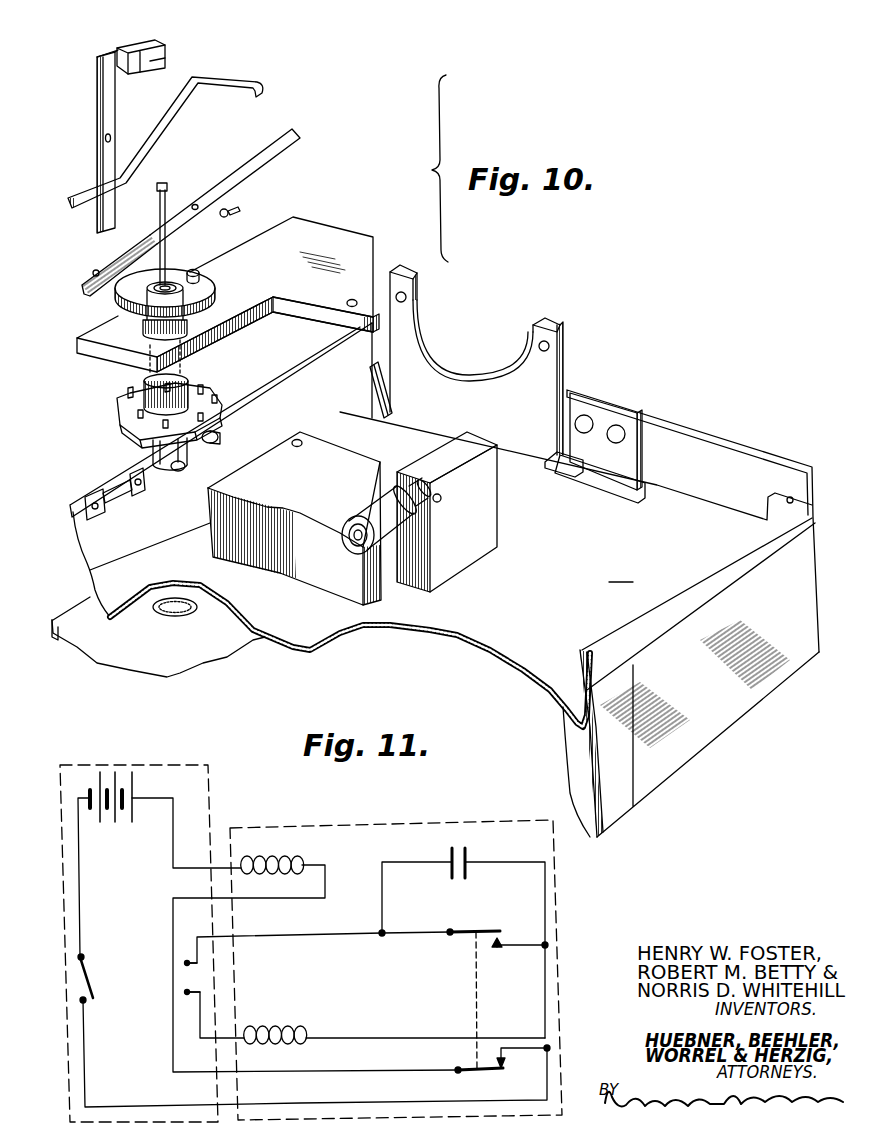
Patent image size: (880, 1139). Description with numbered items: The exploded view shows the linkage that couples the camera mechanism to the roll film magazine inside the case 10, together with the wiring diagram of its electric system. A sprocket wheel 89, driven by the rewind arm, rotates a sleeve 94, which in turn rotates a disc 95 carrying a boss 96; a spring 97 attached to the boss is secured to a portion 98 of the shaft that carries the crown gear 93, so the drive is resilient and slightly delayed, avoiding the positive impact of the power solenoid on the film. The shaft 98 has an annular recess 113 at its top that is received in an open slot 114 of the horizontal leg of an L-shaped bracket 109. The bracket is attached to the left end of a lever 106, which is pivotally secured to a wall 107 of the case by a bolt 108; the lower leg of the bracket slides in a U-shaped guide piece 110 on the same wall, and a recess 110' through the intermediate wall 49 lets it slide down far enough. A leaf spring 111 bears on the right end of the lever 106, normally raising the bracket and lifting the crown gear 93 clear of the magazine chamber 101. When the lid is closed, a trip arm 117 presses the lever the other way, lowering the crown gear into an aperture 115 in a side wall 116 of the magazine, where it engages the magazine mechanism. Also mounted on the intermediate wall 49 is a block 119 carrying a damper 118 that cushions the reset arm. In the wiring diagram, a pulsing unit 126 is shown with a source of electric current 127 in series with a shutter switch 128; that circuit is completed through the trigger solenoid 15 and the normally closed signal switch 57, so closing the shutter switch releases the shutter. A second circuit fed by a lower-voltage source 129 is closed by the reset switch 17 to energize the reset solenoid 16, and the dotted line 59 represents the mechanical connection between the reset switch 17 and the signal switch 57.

In FIG. 10, the L-shaped bracket 109 is at (97, 105).
In FIG. 10, the open slot 114 is at (167, 68).
In FIG. 10, the leaf spring 111 is at (223, 83).
In FIG. 10, the lever 106 is at (287, 160).
In FIG. 10, the shaft 98 is at (113, 252).
In FIG. 10, the bolt 108 is at (237, 213).
In FIG. 10, the annular recess 113 is at (167, 193).
In FIG. 10, the disc 95 is at (203, 283).
In FIG. 10, the spring 97 is at (167, 284).
In FIG. 10, the boss 96 is at (193, 272).
In FIG. 10, the sleeve 94 is at (107, 362).
In FIG. 10, the wall 107 is at (319, 356).
In FIG. 10, the sprocket wheel 89 is at (188, 380).
In FIG. 10, the crown gear 93 is at (150, 450).
In FIG. 10, the U-shaped guide piece 110 is at (94, 492).
In FIG. 10, the recess 110' is at (114, 564).
In FIG. 10, the trip arm 117 is at (368, 386).
In FIG. 10, the intermediate wall 49 is at (435, 487).
In FIG. 10, the damper 118 is at (430, 560).
In FIG. 10, the block 119 is at (483, 520).
In FIG. 10, the side wall 116 is at (233, 643).
In FIG. 10, the aperture 115 is at (177, 617).
In FIG. 10, the magazine chamber 101 is at (577, 750).
In FIG. 10, the case 10 is at (737, 697).
In FIG. 11, the pulsing unit 126 is at (212, 792).
In FIG. 11, the source of electric current 127 is at (134, 790).
In FIG. 11, the shutter switch 128 is at (90, 973).
In FIG. 11, the trigger solenoid 15 is at (303, 858).
In FIG. 11, the reset solenoid 16 is at (290, 1033).
In FIG. 11, the source of electricity 129 is at (197, 980).
In FIG. 11, the reset switch 17 is at (487, 931).
In FIG. 11, the dotted line 59 is at (480, 997).
In FIG. 11, the signal switch 57 is at (500, 1073).